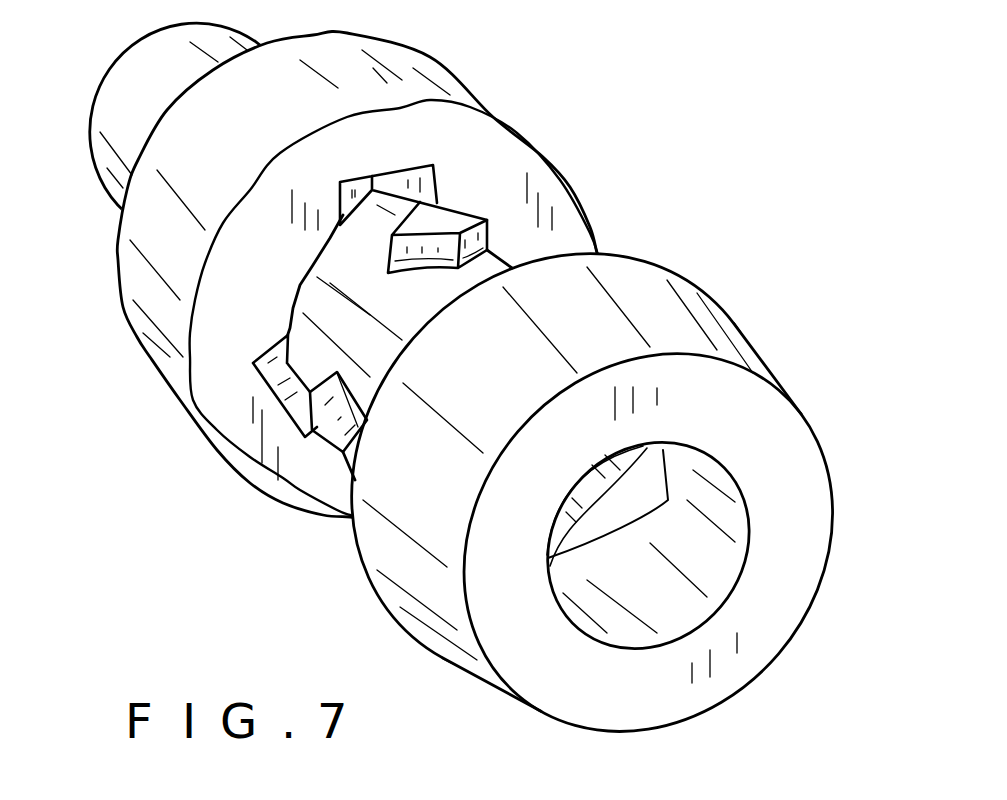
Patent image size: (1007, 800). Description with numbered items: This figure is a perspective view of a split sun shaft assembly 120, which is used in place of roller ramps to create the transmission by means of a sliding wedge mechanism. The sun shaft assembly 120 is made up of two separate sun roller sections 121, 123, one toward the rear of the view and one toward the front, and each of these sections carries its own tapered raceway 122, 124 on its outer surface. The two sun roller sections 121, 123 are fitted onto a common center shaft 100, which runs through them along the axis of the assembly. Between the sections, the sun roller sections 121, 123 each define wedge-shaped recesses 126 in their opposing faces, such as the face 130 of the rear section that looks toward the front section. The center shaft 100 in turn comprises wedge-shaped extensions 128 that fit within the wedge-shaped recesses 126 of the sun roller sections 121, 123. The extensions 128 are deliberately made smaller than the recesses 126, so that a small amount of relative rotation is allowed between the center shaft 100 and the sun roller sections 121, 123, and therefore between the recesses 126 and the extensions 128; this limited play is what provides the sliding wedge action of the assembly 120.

The center shaft 100 is at (333, 292).
The split sun shaft assembly 120 is at (581, 78).
The sun roller section 121 is at (240, 433).
The tapered raceway 122 is at (400, 77).
The sun roller section 123 is at (787, 448).
The tapered raceway 124 is at (687, 323).
The wedge-shaped recess 126 is at (420, 185).
The wedge-shaped extension 128 is at (447, 223).
The opposing face 130 is at (450, 146).